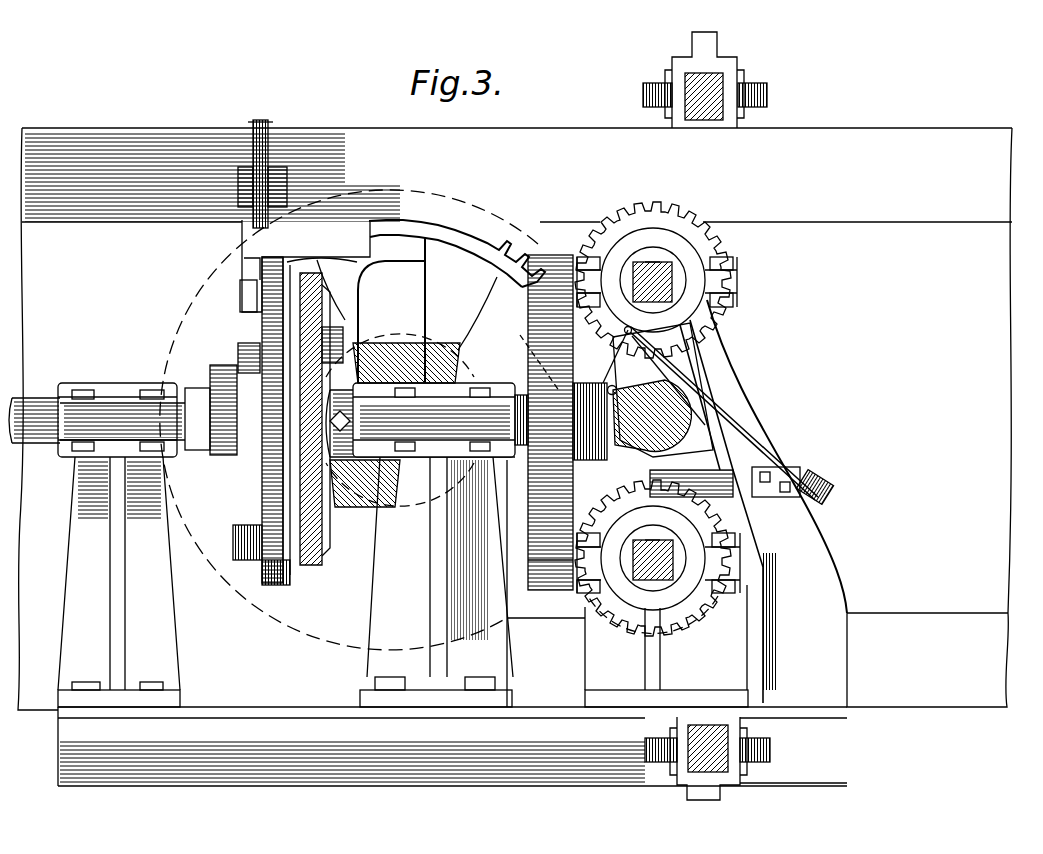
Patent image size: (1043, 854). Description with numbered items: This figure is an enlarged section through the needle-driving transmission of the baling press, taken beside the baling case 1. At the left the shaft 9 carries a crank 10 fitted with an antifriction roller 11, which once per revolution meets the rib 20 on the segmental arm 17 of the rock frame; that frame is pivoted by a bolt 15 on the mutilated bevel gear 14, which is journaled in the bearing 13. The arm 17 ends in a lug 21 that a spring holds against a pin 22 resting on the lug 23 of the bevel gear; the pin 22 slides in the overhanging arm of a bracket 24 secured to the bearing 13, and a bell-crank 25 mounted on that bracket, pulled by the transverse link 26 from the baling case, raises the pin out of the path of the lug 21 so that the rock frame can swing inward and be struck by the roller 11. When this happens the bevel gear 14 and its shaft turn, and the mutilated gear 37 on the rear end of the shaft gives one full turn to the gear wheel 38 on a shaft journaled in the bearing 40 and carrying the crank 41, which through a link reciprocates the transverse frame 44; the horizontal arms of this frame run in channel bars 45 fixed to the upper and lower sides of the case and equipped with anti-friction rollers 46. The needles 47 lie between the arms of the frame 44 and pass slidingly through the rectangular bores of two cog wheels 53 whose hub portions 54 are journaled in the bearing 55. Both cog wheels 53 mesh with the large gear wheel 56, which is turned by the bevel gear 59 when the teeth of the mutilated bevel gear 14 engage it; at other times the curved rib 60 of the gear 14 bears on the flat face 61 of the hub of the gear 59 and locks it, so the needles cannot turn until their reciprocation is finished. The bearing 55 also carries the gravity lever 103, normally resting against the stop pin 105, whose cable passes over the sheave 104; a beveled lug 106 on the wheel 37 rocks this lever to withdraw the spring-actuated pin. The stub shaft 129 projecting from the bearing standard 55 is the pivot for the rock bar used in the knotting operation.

The baling case 1 is at (72, 128).
The shaft 9 is at (27, 397).
The crank 10 is at (205, 362).
The antifriction roller 11 is at (237, 405).
The bearing 13 is at (487, 383).
The mutilated bevel gear 14 is at (302, 600).
The bolt 15 is at (240, 560).
The segmental arm 17 is at (275, 588).
The rib 20 is at (250, 343).
The lug 21 is at (250, 270).
The pin 22 is at (244, 300).
The lug 23 is at (300, 285).
The bracket 24 is at (242, 236).
The bell-crank 25 is at (256, 119).
The transverse link 26 is at (276, 126).
The mutilated gear 37 is at (550, 256).
The gear wheel 38 is at (540, 466).
The bearing 40 is at (436, 582).
The crank 41 is at (584, 460).
The transverse frame 44 is at (722, 122).
The channel bars 45 is at (737, 60).
The anti-friction rollers 46 is at (767, 93).
The needles 47 is at (665, 283).
The cog wheels 53 is at (700, 226).
The hub portions 54 is at (650, 262).
The bearing 55 is at (677, 503).
The large gear wheel 56 is at (470, 218).
The bevel gear 59 is at (432, 358).
The curved rib 60 is at (340, 330).
The flat face 61 is at (333, 525).
The gravity lever 103 is at (640, 342).
The sheave 104 is at (828, 496).
The stop pin 105 is at (630, 372).
The beveled lug 106 is at (520, 335).
The stub shaft 129 is at (705, 425).